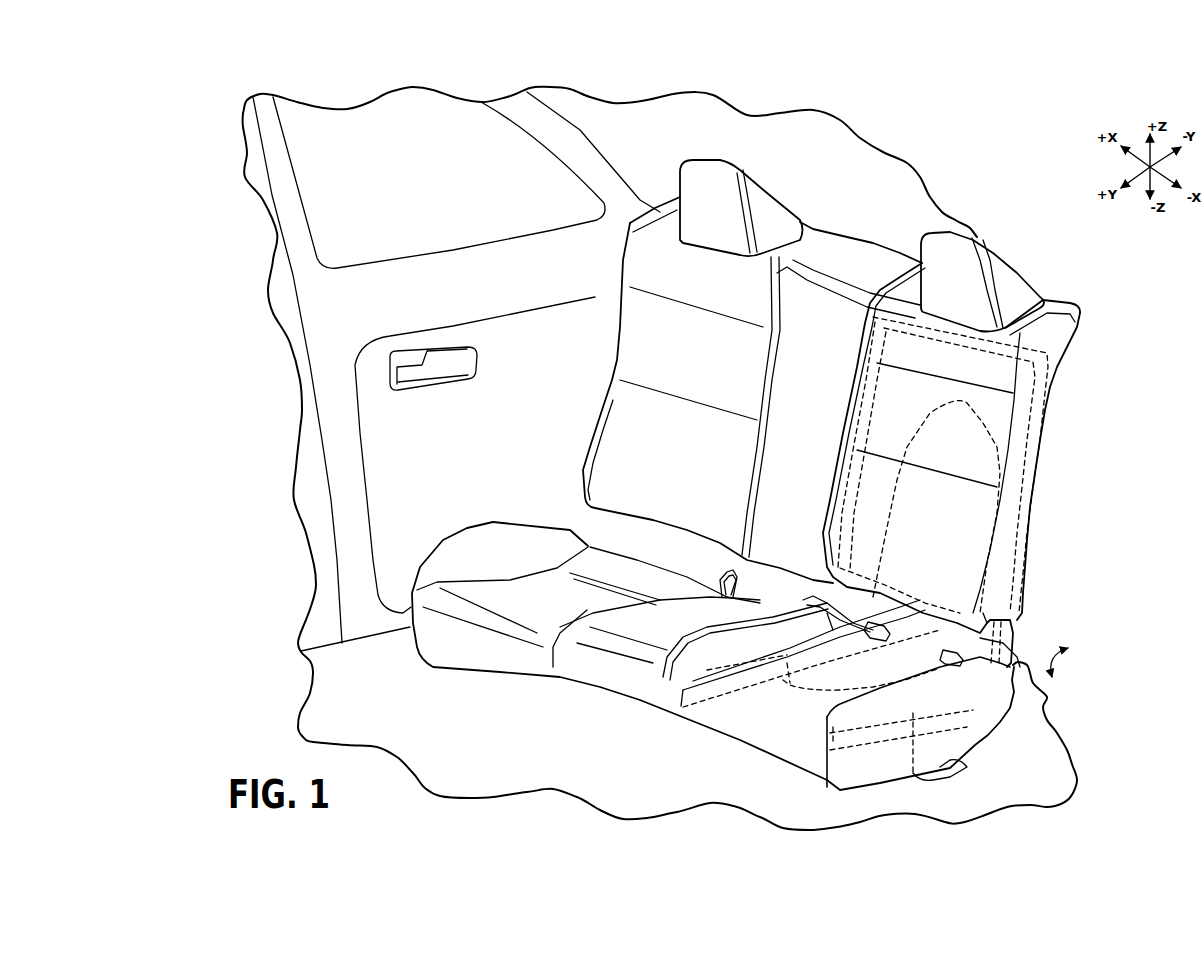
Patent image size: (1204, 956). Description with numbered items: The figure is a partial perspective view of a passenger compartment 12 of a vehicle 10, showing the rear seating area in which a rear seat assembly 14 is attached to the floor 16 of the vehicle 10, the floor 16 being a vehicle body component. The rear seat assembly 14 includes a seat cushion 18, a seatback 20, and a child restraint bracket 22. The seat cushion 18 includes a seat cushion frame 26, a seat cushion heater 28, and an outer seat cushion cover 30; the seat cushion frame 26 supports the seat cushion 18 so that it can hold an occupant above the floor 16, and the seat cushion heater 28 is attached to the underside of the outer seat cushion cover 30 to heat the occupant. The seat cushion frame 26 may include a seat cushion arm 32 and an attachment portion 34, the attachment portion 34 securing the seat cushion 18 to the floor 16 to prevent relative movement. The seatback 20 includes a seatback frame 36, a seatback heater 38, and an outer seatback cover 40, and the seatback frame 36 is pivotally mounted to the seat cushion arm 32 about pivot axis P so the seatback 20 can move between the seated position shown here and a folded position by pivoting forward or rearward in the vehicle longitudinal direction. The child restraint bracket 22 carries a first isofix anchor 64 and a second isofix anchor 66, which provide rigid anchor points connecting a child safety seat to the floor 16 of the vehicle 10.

The vehicle 10 is at (787, 102).
The passenger compartment 12 is at (320, 313).
The rear seat assembly 14 is at (1097, 298).
The floor 16 is at (1041, 752).
The seat cushion 18 is at (880, 790).
The seatback 20 is at (1067, 347).
The child restraint bracket 22 is at (900, 635).
The seat cushion frame 26 is at (755, 735).
The seat cushion heater 28 is at (783, 680).
The outer seat cushion cover 30 is at (905, 726).
The seat cushion arm 32 is at (933, 775).
The attachment portion 34 is at (1020, 667).
The seatback frame 36 is at (1050, 385).
The seatback heater 38 is at (980, 412).
The outer seatback cover 40 is at (887, 398).
The first isofix anchor 64 is at (973, 653).
The second isofix anchor 66 is at (873, 633).